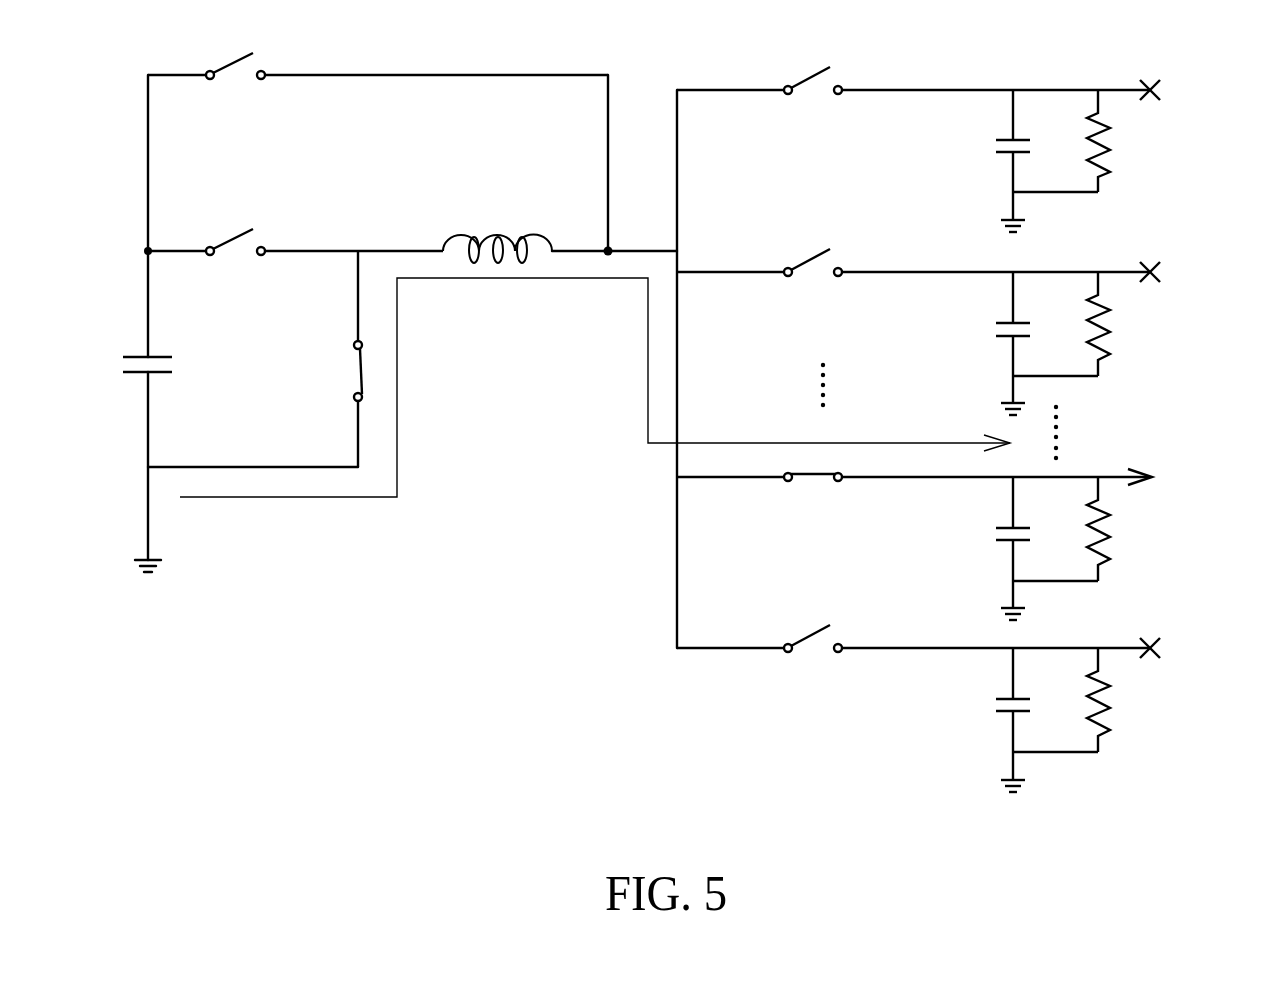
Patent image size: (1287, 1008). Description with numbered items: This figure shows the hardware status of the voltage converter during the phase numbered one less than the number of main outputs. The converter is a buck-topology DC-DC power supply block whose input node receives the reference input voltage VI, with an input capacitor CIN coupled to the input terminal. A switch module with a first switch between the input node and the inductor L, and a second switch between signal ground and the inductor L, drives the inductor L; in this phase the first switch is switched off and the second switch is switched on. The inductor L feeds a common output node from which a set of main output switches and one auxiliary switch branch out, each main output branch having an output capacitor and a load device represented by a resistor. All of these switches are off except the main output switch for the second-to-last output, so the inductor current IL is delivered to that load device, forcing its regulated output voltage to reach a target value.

The reference input voltage VI is at (132, 243).
The input capacitor CIN is at (125, 361).
The inductor L is at (497, 231).
The inductor current IL is at (595, 387).